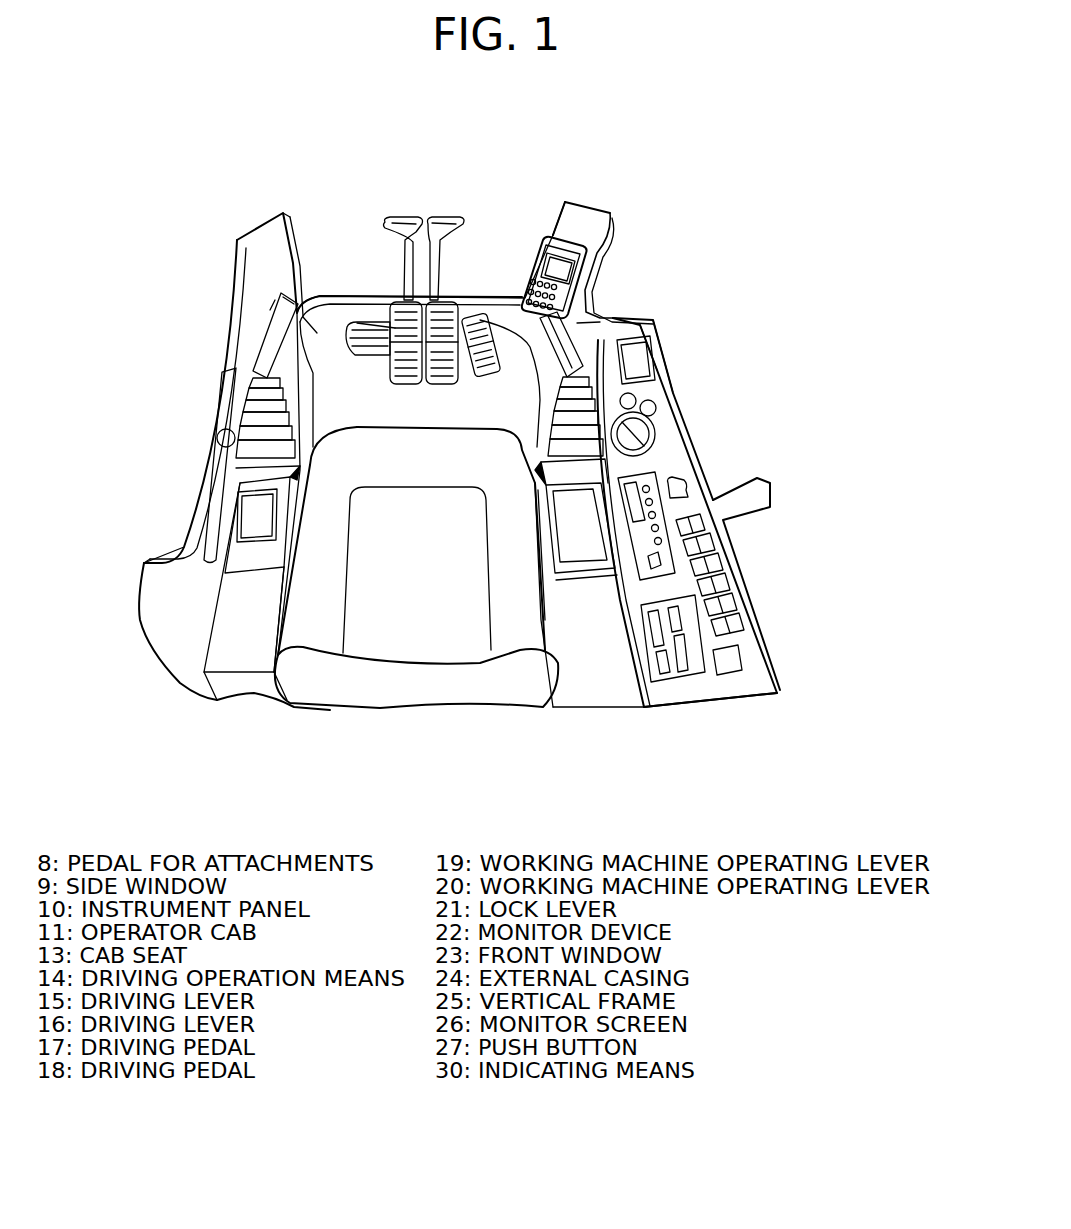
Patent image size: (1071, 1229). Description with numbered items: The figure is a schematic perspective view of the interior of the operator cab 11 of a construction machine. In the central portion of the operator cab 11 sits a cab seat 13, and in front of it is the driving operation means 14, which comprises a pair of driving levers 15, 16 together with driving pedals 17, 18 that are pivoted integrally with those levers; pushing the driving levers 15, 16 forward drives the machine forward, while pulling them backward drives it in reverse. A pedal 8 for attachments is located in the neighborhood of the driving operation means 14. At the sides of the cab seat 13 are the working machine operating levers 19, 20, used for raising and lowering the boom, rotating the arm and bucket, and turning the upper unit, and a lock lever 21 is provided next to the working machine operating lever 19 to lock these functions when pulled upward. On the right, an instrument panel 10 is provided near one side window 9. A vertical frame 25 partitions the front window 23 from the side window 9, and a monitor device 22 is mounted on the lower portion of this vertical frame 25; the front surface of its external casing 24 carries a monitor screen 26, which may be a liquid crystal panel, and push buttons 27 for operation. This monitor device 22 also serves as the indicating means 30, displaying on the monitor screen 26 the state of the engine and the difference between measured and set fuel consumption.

The pedal for attachments 8 is at (484, 313).
The side window 9 is at (707, 397).
The instrument panel 10 is at (680, 457).
The operator cab 11 is at (664, 226).
The cab seat 13 is at (380, 645).
The driving operation means 14 is at (425, 266).
The driving lever 15 is at (398, 218).
The driving lever 16 is at (452, 218).
The driving pedal 17 is at (411, 368).
The driving pedal 18 is at (443, 368).
The working machine operating lever 19 is at (270, 338).
The working machine operating lever 20 is at (558, 332).
The lock lever 21 is at (222, 402).
The monitor device 22 is at (596, 241).
The front window 23 is at (325, 248).
The external casing 24 is at (581, 280).
The vertical frame 25 is at (593, 218).
The monitor screen 26 is at (568, 259).
The push button 27 is at (524, 292).
The indicating means 30 is at (576, 198).